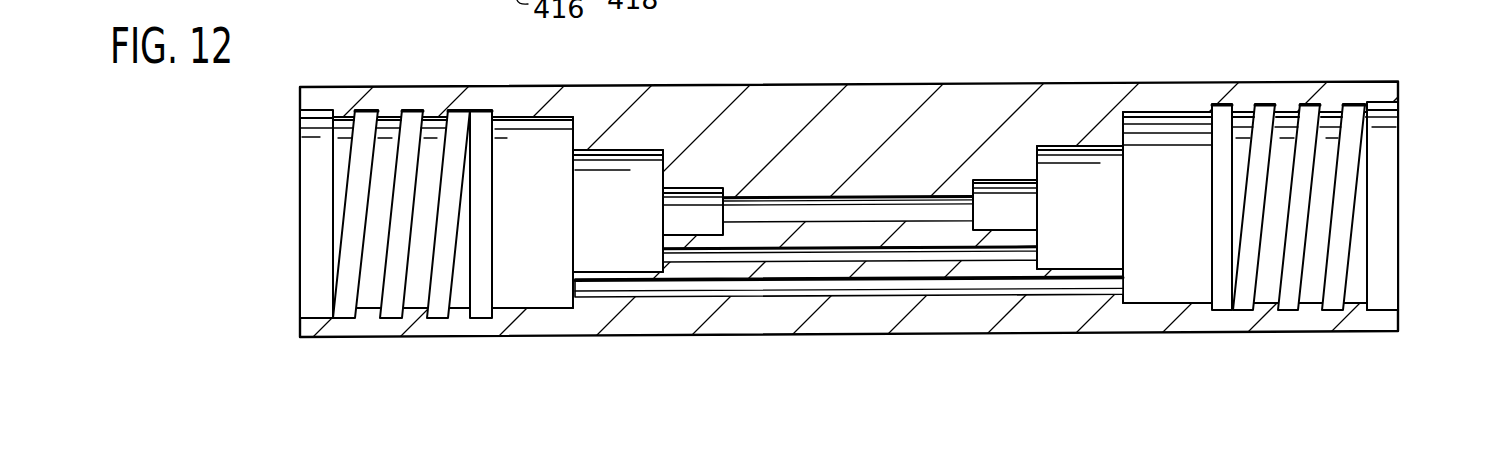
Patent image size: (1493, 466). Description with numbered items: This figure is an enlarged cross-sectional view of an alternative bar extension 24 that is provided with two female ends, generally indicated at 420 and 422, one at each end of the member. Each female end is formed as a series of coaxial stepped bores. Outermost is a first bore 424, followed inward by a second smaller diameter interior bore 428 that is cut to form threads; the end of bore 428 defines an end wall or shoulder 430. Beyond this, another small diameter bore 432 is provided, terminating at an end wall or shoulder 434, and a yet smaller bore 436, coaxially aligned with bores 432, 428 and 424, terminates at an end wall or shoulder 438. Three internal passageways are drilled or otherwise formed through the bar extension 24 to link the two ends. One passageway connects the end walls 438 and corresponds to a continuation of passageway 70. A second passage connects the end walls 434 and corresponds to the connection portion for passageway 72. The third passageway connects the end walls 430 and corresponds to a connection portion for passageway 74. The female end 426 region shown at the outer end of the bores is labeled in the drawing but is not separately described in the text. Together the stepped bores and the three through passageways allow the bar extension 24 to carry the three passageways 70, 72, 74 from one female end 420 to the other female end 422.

The bar extension 24 is at (954, 56).
The passageway 70 is at (795, 200).
The passageway 72 is at (746, 250).
The passageway 74 is at (772, 288).
The female end 420 is at (367, 216).
The female end 422 is at (1308, 164).
The first bore 424 is at (320, 213).
The end face 426 is at (313, 319).
The second smaller diameter interior bore 428 is at (538, 308).
The end wall or shoulder 430 is at (573, 140).
The small diameter bore 432 is at (592, 270).
The end wall or shoulder 434 is at (662, 180).
The yet smaller bore 436 is at (680, 233).
The end wall or shoulder 438 is at (712, 198).